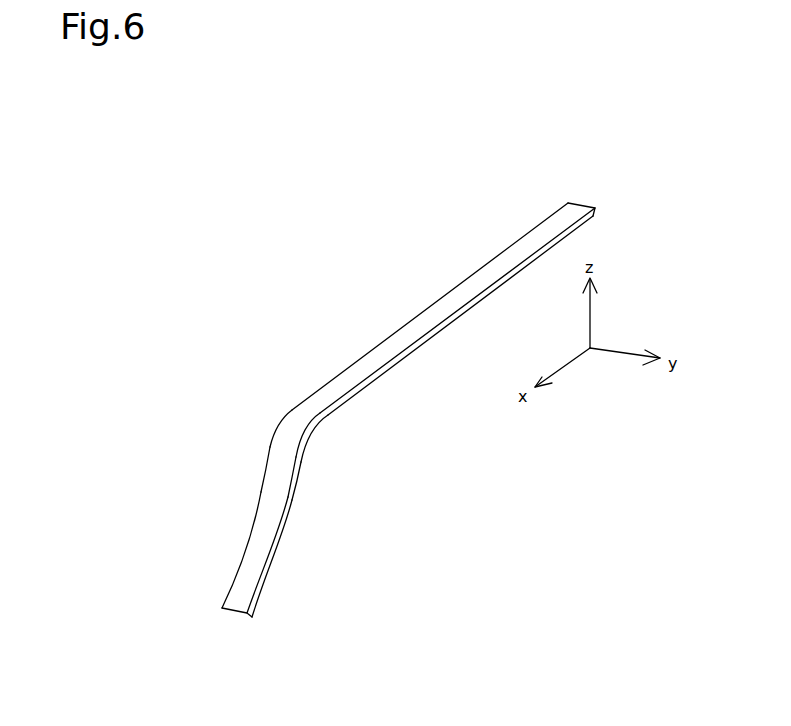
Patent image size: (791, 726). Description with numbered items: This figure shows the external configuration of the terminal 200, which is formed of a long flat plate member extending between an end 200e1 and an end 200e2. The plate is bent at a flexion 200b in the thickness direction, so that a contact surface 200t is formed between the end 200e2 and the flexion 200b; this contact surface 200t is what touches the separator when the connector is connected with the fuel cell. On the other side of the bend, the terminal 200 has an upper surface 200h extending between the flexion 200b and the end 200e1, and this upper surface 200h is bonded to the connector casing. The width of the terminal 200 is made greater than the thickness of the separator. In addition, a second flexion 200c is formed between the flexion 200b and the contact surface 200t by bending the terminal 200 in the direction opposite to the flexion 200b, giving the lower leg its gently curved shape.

The terminal 200 is at (313, 242).
The end 200e1 is at (580, 204).
The upper surface 200h is at (423, 322).
The flexion 200b is at (298, 426).
The second flexion 200c is at (286, 476).
The contact surface 200t is at (245, 528).
The end 200e2 is at (235, 611).